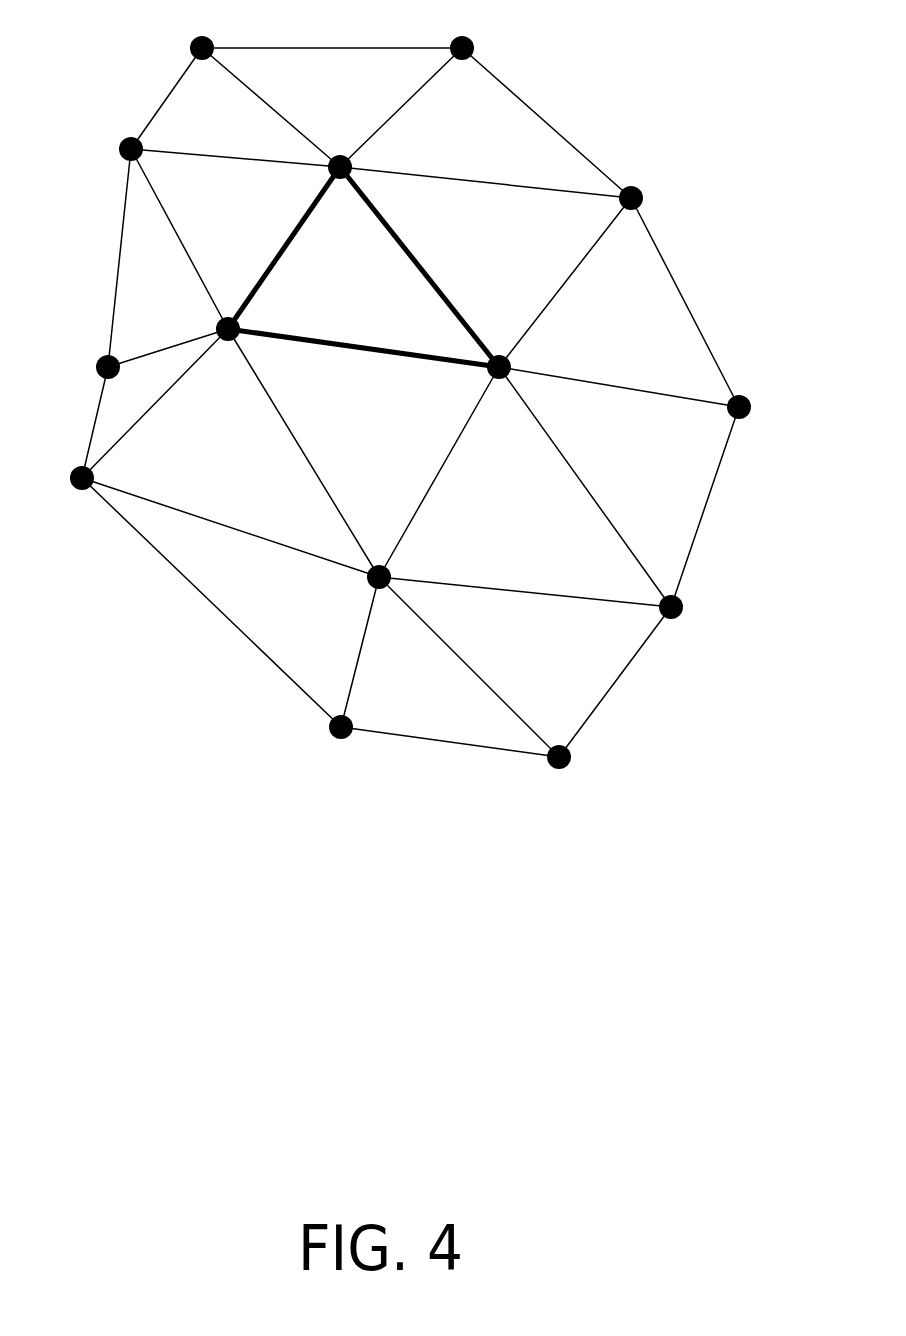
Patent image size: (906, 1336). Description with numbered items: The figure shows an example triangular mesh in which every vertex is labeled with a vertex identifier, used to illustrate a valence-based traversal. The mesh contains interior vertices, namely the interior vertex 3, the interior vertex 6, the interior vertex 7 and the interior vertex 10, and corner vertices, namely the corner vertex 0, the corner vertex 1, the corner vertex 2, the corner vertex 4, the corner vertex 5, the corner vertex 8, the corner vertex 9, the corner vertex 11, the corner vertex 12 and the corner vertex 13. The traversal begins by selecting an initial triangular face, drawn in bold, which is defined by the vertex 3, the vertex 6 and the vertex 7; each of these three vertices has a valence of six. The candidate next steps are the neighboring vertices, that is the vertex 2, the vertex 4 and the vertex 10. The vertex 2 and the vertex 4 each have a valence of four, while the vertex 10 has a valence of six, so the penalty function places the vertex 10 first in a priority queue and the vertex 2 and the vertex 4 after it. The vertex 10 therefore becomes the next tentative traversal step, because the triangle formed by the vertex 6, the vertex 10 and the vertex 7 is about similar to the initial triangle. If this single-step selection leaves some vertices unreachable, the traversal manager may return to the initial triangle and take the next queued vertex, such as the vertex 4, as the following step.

The corner vertex 0 is at (202, 30).
The corner vertex 1 is at (462, 30).
The corner vertex 2 is at (116, 136).
The interior vertex 3 is at (340, 152).
The corner vertex 4 is at (649, 183).
The corner vertex 5 is at (87, 362).
The interior vertex 6 is at (228, 311).
The interior vertex 7 is at (499, 343).
The corner vertex 8 is at (753, 402).
The corner vertex 9 is at (67, 490).
The interior vertex 10 is at (378, 552).
The corner vertex 11 is at (689, 610).
The corner vertex 12 is at (331, 746).
The corner vertex 13 is at (560, 777).